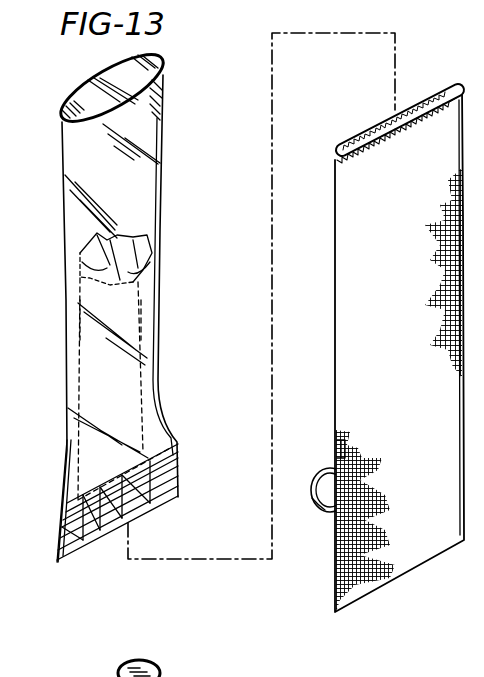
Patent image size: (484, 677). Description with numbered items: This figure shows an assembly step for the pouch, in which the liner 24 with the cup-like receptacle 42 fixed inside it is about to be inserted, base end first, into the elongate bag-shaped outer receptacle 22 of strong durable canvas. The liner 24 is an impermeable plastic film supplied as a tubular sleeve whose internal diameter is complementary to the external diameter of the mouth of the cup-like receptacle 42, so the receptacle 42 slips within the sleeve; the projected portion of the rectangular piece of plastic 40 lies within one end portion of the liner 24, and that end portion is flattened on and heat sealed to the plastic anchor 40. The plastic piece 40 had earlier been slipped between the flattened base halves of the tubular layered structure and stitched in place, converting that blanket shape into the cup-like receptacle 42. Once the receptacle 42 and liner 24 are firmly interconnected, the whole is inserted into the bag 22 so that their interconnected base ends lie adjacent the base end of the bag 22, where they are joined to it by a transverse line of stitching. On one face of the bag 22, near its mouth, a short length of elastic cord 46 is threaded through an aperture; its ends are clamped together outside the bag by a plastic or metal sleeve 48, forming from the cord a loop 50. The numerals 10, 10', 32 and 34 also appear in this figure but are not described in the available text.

The bag 10 is at (145, 389).
The folded bag portion 10' is at (63, 268).
The bag-shaped outer receptacle 22 is at (354, 233).
The liner 24 is at (163, 117).
The bag top opening 32 is at (140, 275).
The bag side edges 34 is at (81, 320).
The rectangular piece of plastic 40 is at (157, 487).
The cup-like receptacle 42 is at (86, 246).
The elastic cord 46 is at (322, 473).
The sleeve 48 is at (334, 450).
The loop 50 is at (318, 506).